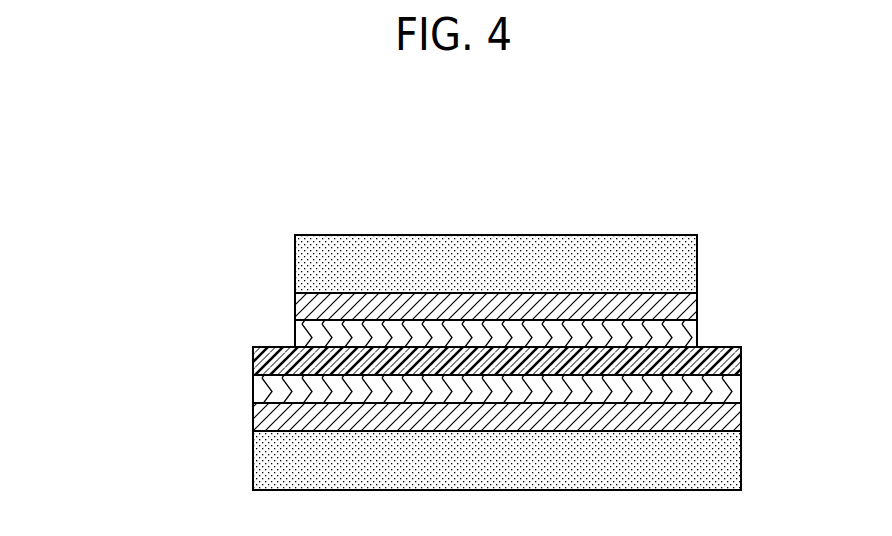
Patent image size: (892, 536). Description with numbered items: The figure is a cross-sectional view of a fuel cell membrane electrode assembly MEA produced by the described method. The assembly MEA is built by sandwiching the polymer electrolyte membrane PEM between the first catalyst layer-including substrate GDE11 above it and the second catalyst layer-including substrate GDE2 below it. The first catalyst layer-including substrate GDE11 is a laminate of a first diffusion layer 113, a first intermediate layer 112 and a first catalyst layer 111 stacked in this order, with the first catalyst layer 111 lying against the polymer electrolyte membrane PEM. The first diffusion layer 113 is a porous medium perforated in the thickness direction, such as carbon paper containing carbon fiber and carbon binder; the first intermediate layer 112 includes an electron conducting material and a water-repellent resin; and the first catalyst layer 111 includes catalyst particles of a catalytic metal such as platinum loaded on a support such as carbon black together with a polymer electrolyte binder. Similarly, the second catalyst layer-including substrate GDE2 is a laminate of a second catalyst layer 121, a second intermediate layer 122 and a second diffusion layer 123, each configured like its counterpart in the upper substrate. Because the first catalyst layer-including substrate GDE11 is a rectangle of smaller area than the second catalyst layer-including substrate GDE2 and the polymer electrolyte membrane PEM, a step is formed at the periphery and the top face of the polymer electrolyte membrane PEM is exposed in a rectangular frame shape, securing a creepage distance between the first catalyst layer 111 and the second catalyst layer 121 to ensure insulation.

The fuel cell membrane electrode assembly MEA is at (742, 165).
The first catalyst layer-including substrate GDE11 is at (166, 238).
The first diffusion layer 113 is at (310, 264).
The first intermediate layer 112 is at (298, 308).
The first catalyst layer 111 is at (306, 335).
The polymer electrolyte membrane PEM is at (254, 353).
The second catalyst layer-including substrate GDE2 is at (119, 388).
The second catalyst layer 121 is at (254, 383).
The second intermediate layer 122 is at (254, 412).
The second diffusion layer 123 is at (254, 457).